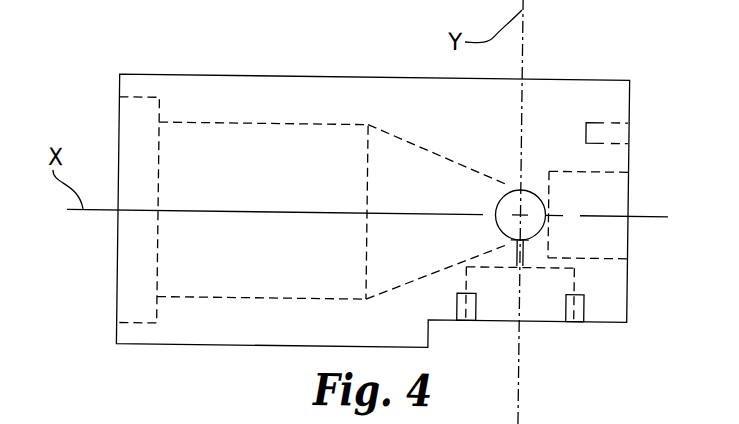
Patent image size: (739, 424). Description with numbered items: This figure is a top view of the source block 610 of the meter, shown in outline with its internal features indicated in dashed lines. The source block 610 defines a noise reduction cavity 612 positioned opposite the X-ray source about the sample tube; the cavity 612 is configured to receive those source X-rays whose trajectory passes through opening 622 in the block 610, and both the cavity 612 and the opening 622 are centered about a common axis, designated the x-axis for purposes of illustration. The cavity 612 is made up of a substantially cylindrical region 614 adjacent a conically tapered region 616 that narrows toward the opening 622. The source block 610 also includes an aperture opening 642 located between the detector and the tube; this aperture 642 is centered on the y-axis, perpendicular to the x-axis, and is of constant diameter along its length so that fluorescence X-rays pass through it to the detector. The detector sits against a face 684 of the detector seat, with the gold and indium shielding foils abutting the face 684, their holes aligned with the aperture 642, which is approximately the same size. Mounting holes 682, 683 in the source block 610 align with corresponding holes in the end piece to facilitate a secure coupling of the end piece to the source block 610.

The source block 610 is at (104, 44).
The noise reduction cavity 612 is at (184, 128).
The substantially cylindrical region 614 is at (183, 301).
The conically tapered region 616 is at (393, 287).
The opening 622 is at (546, 205).
The aperture opening 642 is at (528, 260).
The mounting hole 682 is at (584, 301).
The mounting hole 683 is at (594, 122).
The face 684 is at (501, 268).